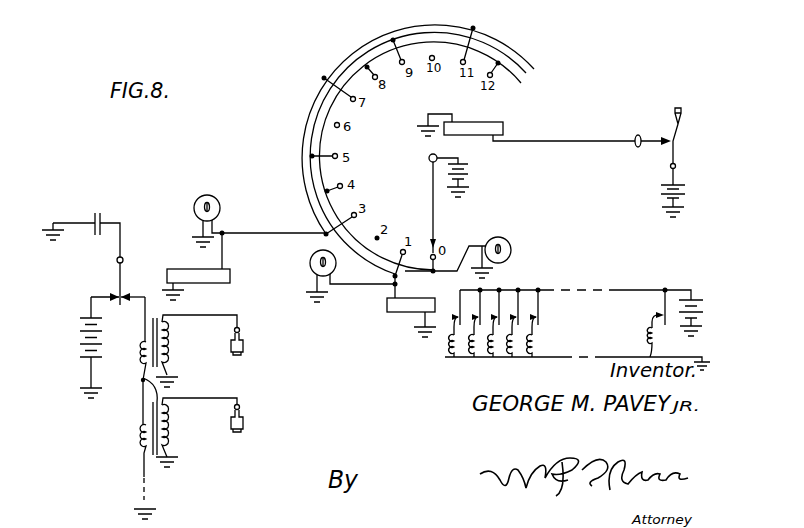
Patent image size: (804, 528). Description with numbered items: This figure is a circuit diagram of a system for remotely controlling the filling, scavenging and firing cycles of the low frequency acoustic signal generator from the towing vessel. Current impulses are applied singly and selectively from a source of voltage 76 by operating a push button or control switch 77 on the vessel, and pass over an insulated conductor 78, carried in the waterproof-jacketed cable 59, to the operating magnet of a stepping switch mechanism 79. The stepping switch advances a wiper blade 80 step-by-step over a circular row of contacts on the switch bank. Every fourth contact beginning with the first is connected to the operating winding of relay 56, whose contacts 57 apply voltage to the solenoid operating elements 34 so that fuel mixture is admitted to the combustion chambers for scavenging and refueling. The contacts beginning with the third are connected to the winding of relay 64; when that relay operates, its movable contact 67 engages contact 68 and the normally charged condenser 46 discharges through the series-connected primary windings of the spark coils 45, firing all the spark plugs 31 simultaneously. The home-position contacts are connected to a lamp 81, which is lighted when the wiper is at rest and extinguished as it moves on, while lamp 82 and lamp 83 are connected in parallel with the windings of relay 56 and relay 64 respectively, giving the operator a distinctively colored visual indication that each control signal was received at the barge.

The spark plugs 31 is at (244, 337).
The solenoid operating elements 34 is at (447, 347).
The spark coils 45 is at (137, 385).
The condenser 46 is at (102, 215).
The relay 56 is at (400, 313).
The contacts 57 is at (535, 317).
The cable 59 is at (639, 129).
The relay 64 is at (188, 268).
The movable contact 67 is at (118, 277).
The contact 68 is at (132, 294).
The source of voltage 76 is at (662, 185).
The push button or control switch 77 is at (667, 123).
The insulated conductor 78 is at (569, 141).
The stepping switch mechanism 79 is at (470, 121).
The wiper blade 80 is at (434, 230).
The lamp 81 is at (511, 253).
The lamp 82 is at (311, 257).
The lamp 83 is at (220, 207).